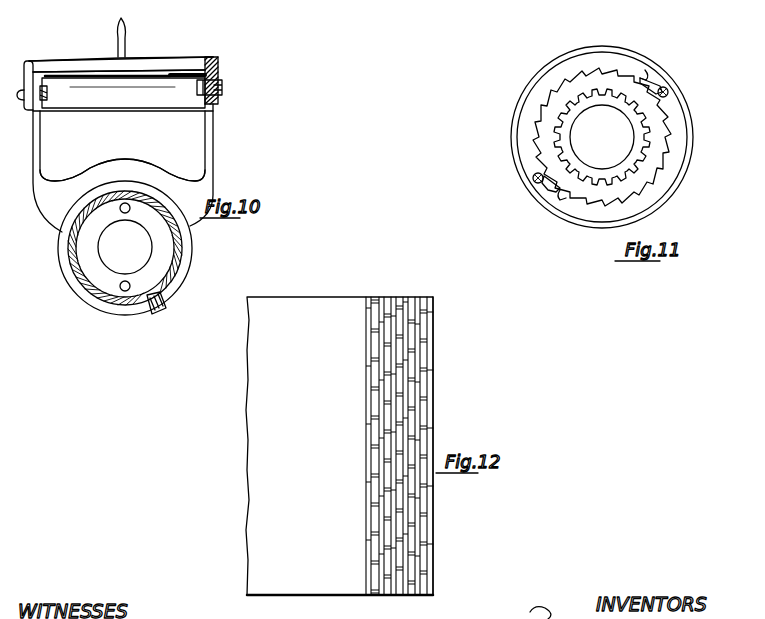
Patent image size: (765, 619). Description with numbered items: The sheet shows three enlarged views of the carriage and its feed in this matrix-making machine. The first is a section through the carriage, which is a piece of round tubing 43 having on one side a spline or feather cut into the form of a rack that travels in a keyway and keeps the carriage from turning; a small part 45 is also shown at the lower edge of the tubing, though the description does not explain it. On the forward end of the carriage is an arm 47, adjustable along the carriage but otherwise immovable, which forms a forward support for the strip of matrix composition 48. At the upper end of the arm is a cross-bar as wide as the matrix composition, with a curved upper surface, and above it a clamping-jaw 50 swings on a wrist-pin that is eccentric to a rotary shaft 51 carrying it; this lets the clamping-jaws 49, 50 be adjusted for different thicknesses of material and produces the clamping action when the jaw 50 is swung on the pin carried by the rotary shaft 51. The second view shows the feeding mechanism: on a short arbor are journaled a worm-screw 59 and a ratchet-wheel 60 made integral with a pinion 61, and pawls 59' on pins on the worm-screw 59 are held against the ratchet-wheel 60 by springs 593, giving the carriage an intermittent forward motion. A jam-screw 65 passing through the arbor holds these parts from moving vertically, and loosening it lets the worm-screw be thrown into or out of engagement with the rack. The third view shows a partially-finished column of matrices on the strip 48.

In FIG. 10, the round tubing 43 is at (185, 258).
In FIG. 10, the pawl 45 is at (152, 314).
In FIG. 10, the arm 47 is at (158, 180).
In FIG. 12, the strip of matrix composition 48 is at (270, 432).
In FIG. 10, the clamping-jaw 49 is at (90, 90).
In FIG. 10, the clamping-jaw 50 is at (173, 68).
In FIG. 10, the rotary shaft 51 is at (222, 86).
In FIG. 11, the worm-screw 59 is at (602, 122).
In FIG. 11, the pawl 59' is at (616, 144).
In FIG. 11, the spring 593 is at (650, 72).
In FIG. 11, the ratchet-wheel 60 is at (658, 178).
In FIG. 11, the pinion 61 is at (552, 131).
In FIG. 11, the jam-screw 65 is at (615, 142).